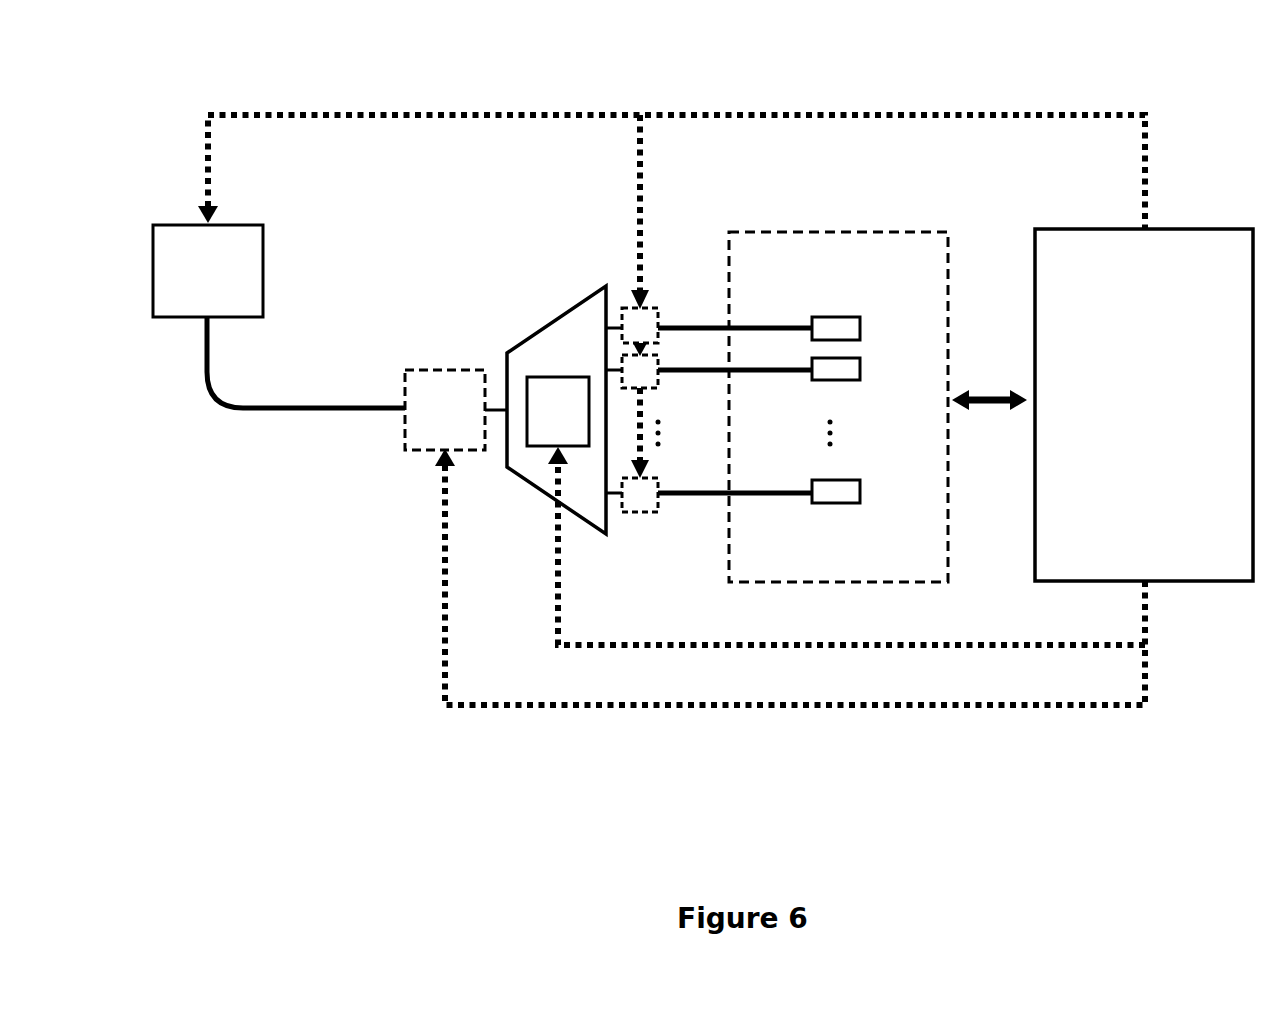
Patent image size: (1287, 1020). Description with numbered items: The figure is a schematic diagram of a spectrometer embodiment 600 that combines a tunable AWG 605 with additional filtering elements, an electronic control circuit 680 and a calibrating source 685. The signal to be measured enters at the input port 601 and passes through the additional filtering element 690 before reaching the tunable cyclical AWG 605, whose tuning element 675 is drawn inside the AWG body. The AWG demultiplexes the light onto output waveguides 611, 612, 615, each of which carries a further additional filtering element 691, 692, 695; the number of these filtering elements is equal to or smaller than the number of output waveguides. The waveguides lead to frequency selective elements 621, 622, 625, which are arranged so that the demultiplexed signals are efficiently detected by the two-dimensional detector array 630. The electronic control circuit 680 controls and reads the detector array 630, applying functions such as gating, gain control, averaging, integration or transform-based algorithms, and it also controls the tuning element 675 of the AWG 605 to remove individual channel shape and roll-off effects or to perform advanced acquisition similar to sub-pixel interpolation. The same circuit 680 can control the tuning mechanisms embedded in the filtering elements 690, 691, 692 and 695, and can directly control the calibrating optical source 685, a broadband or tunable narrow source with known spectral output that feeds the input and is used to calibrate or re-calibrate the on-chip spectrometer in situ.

The optical sensing system 600 is at (203, 60).
The input port 601 is at (347, 407).
The tunable AWG 605 is at (542, 322).
The first optical channel 611 is at (758, 325).
The second optical channel 612 is at (783, 367).
The nth optical channel 615 is at (685, 495).
The frequency selective element 621 is at (862, 322).
The frequency selective element 622 is at (862, 367).
The frequency selective element 625 is at (862, 490).
The 2D detector array 630 is at (840, 230).
The tuning element 675 is at (537, 447).
The electronic control circuit 680 is at (1208, 582).
The calibrating optical source 685 is at (182, 318).
The additional filtering element 690 is at (405, 450).
The additional filtering element 691 is at (632, 307).
The additional filtering element 692 is at (657, 380).
The additional filtering element 695 is at (640, 512).